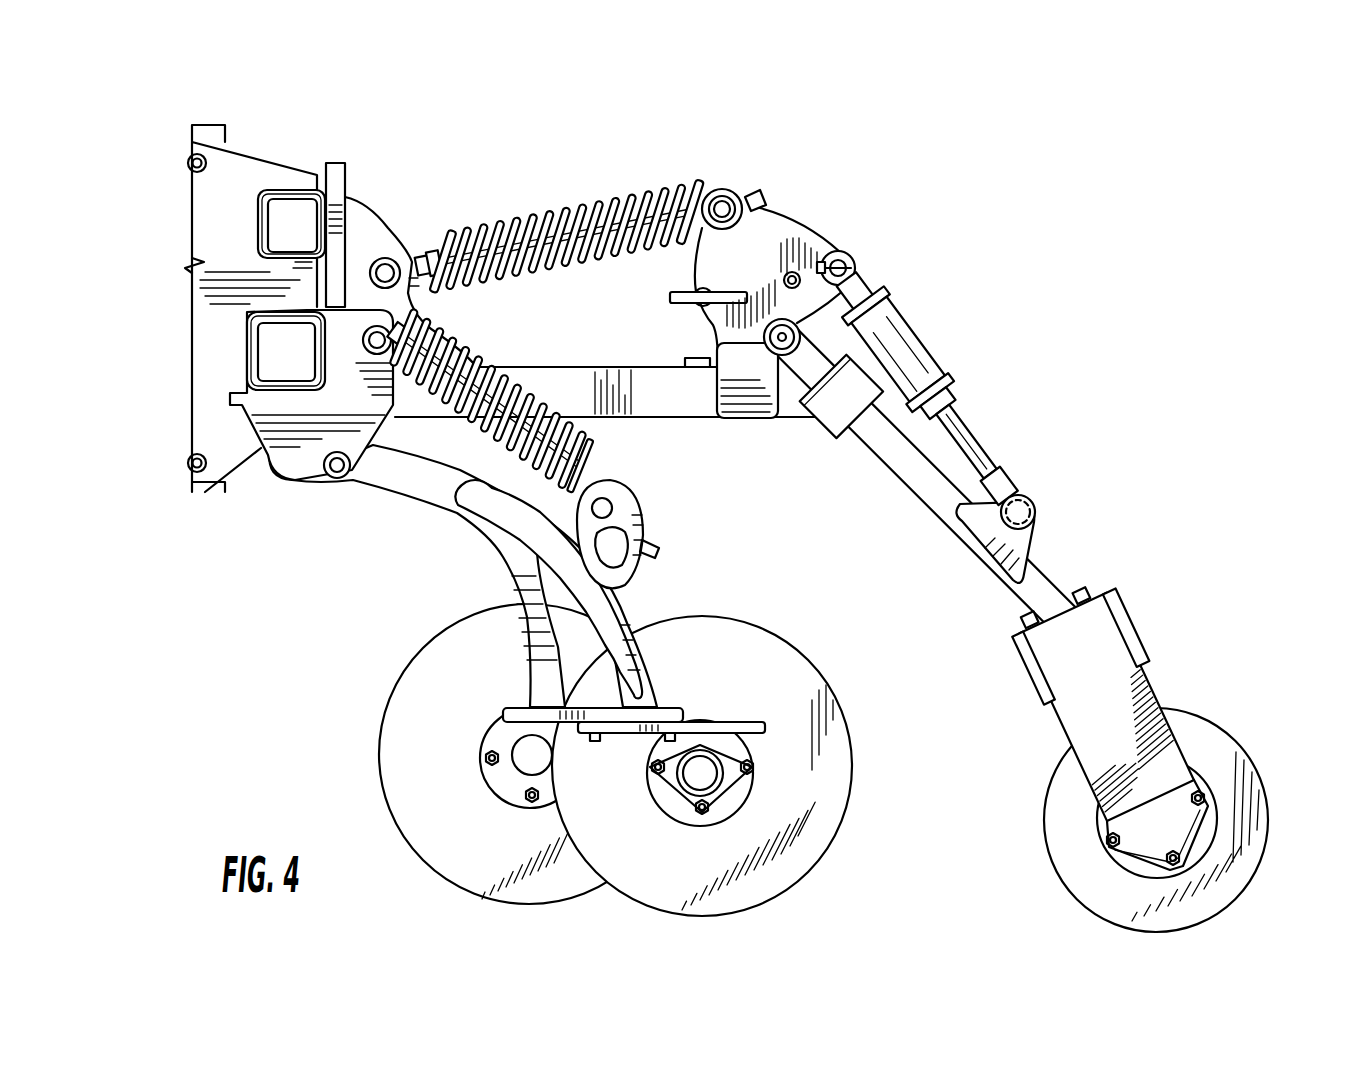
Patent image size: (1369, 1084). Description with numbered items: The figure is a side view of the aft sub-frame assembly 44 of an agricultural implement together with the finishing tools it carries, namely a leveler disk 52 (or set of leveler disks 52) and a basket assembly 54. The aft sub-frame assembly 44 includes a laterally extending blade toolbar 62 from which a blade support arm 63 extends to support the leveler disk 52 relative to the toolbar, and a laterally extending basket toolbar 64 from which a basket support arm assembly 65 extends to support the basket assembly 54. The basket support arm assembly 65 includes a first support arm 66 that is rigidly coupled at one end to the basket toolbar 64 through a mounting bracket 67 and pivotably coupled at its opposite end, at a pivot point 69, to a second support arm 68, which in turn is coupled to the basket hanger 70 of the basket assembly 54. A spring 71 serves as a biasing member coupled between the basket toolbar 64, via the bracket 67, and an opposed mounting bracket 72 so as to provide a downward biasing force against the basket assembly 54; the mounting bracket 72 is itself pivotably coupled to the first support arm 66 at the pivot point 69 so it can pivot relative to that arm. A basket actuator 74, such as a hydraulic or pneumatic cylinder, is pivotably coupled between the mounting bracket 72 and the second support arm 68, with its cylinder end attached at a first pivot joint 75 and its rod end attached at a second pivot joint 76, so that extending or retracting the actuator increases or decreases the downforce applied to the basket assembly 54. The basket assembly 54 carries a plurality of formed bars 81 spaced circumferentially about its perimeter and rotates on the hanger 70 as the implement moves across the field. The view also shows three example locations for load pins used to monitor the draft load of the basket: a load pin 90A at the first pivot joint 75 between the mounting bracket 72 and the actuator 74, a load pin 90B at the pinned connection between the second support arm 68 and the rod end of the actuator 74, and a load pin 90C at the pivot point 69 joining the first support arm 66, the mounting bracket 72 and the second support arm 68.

The aft sub-frame assembly 44 is at (172, 116).
The leveler disk 52 is at (425, 718).
The basket assembly 54 is at (1263, 685).
The blade toolbar 62 is at (258, 368).
The blade support arm 63 is at (443, 490).
The basket toolbar 64 is at (264, 227).
The basket support arm assembly 65 is at (808, 448).
The first support arm 66 is at (575, 366).
The mounting bracket 67 is at (367, 240).
The second support arm 68 is at (912, 495).
The pivot point 69 is at (780, 340).
The basket hanger 70 is at (1133, 638).
The spring 71 is at (543, 207).
The mounting bracket 72 is at (782, 230).
The basket actuator 74 is at (930, 348).
The first pivot joint 75 is at (862, 232).
The second pivot joint 76 is at (1052, 477).
The bars 81 is at (1257, 773).
The load pin 90A is at (856, 252).
The load pin 90B is at (1040, 512).
The load pin 90C is at (764, 337).